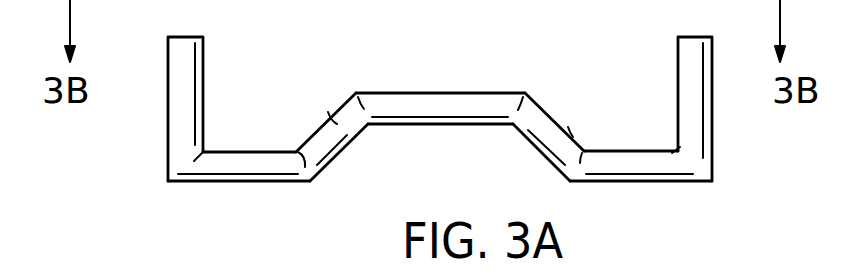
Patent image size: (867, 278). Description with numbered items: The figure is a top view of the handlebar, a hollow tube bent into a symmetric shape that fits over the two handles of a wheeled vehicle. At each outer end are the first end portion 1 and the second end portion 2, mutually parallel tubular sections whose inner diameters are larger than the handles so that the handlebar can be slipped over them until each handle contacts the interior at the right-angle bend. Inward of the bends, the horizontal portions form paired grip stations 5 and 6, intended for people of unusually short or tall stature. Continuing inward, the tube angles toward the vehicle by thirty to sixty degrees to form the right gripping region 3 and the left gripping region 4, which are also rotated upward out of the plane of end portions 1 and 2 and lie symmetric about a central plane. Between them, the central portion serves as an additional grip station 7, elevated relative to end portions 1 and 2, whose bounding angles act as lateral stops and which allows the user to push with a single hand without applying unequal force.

The first end portion 1 is at (712, 125).
The second end portion 2 is at (168, 103).
The right gripping region 3 is at (571, 134).
The left gripping region 4 is at (331, 116).
The grip station 5 is at (642, 183).
The grip station 6 is at (238, 183).
The additional grip station 7 is at (466, 126).